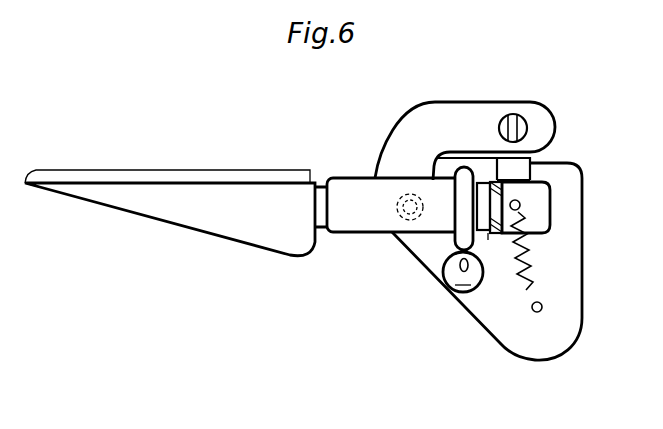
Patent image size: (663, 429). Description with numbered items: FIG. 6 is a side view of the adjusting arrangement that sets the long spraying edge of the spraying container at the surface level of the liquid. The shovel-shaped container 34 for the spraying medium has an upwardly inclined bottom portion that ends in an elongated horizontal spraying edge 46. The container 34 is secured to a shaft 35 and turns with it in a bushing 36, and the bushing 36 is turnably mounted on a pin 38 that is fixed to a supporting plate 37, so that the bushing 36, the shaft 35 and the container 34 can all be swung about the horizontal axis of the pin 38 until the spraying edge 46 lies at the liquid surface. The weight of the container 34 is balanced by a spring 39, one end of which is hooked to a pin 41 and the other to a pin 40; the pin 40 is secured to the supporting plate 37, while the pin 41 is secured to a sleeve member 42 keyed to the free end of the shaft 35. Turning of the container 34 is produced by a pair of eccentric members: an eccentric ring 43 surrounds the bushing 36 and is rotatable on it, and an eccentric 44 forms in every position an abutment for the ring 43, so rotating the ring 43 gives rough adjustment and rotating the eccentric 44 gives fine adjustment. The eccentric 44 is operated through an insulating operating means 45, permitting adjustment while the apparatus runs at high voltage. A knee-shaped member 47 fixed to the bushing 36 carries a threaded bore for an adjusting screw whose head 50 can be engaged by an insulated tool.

The shovel-shaped container 34 is at (207, 228).
The shaft 35 is at (488, 240).
The bushing 36 is at (338, 229).
The supporting plate 37 is at (543, 343).
The pin 38 is at (402, 218).
The spring 39 is at (528, 290).
The pin 40 is at (542, 309).
The pin 41 is at (520, 205).
The sleeve member 42 is at (546, 182).
The eccentric ring 43 is at (462, 236).
The eccentric 44 is at (462, 291).
The insulating operating means 45 is at (458, 268).
The spraying edge 46 is at (26, 188).
The knee-shaped member 47 is at (463, 117).
The head 50 is at (513, 116).